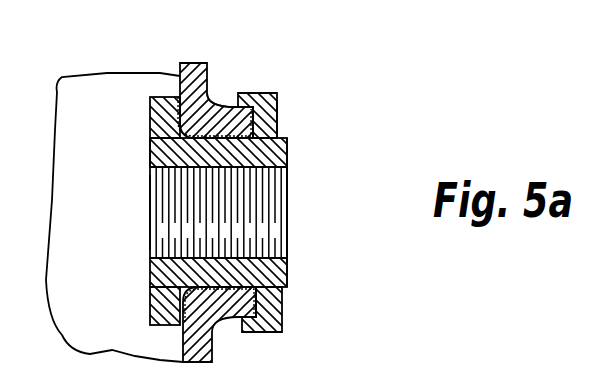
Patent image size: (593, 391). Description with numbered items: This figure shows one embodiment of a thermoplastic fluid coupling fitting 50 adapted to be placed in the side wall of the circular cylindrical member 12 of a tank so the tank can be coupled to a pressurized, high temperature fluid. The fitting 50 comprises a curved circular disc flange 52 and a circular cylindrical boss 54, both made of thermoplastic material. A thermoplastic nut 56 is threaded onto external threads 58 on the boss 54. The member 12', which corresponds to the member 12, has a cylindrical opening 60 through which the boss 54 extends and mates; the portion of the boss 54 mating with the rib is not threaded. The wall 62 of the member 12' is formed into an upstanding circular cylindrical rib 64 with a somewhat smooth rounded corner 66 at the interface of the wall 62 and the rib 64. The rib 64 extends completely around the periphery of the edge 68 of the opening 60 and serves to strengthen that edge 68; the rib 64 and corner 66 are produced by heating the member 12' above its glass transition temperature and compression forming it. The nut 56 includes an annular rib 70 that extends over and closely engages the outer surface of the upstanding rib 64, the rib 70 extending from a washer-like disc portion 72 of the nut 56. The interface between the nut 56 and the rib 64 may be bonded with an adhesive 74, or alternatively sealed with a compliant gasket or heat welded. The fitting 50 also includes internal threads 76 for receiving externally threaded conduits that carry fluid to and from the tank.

The member 12' is at (149, 182).
The circular, cylindrical member 12 is at (554, 381).
The fitting 50 is at (306, 161).
The curved circular disc flange 52 is at (150, 122).
The circular cylindrical boss 54 is at (285, 156).
The thermoplastic nut 56 is at (280, 98).
The external threads 58 is at (283, 134).
The cylindrical opening 60 is at (230, 170).
The wall 62 is at (210, 88).
The upstanding circular cylindrical rib 64 is at (232, 105).
The rounded corner 66 is at (152, 153).
The edge 68 is at (193, 170).
The annular rib 70 is at (232, 325).
The washer-like disc portion 72 is at (282, 304).
The adhesive 74 is at (178, 100).
The internal threads 76 is at (240, 258).